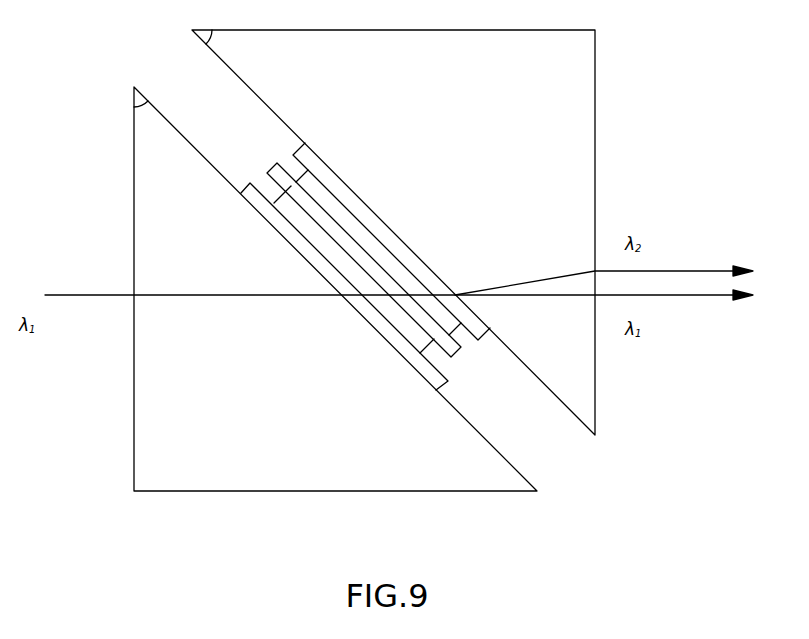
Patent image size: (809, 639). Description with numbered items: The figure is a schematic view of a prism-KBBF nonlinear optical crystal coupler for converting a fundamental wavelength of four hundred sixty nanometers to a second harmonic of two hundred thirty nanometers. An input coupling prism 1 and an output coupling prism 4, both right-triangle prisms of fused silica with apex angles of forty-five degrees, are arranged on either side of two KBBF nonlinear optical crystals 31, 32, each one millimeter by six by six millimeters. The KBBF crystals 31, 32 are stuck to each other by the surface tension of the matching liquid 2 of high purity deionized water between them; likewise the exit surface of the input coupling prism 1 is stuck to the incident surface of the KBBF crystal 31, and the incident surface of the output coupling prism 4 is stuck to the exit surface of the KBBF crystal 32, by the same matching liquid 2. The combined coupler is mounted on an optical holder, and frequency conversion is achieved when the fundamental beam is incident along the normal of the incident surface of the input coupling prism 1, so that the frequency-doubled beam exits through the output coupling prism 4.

The input coupling prism 1 is at (182, 419).
The output coupling prism 4 is at (562, 152).
The matching liquid 2 is at (432, 326).
The KBBF nonlinear optical crystal 31 is at (344, 286).
The KBBF nonlinear optical crystal 32 is at (391, 241).